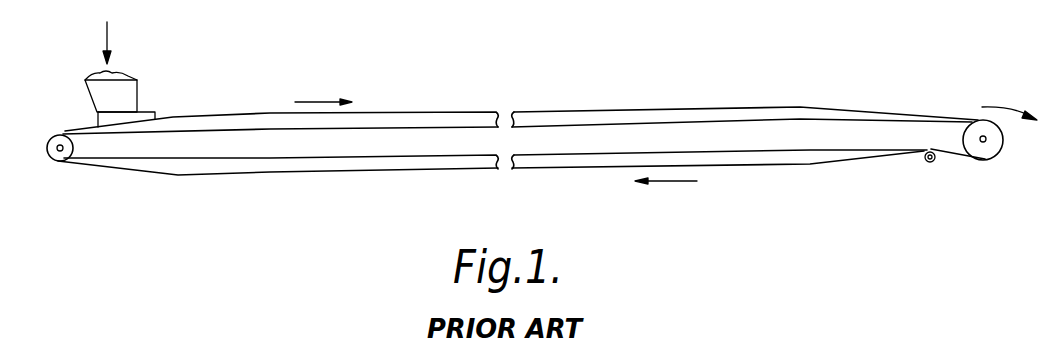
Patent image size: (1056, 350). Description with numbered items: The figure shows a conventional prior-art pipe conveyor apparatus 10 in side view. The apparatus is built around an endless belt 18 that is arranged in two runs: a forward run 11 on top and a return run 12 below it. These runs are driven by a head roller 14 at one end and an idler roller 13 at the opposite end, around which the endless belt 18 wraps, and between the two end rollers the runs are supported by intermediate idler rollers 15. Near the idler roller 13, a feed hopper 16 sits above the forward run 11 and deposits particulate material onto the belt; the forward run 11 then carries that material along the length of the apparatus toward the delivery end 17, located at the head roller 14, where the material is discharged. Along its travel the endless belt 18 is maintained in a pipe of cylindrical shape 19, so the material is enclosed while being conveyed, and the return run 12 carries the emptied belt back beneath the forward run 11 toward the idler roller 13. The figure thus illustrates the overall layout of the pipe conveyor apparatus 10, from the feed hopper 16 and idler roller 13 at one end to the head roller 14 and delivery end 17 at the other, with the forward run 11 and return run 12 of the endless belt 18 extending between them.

The pipe conveyor apparatus 10 is at (400, 88).
The forward run 11 is at (683, 108).
The return run 12 is at (749, 168).
The idler roller 13 is at (58, 163).
The head roller 14 is at (985, 148).
The intermediate idler roller 15 is at (925, 163).
The feed hopper 16 is at (133, 92).
The delivery end 17 is at (985, 98).
The endless belt 18 is at (477, 117).
The pipe of cylindrical shape 19 is at (363, 163).